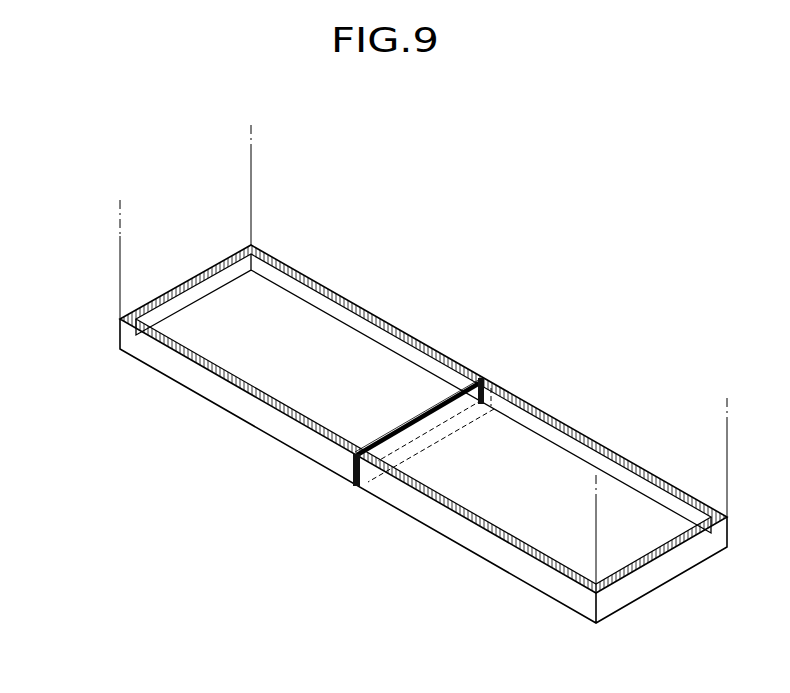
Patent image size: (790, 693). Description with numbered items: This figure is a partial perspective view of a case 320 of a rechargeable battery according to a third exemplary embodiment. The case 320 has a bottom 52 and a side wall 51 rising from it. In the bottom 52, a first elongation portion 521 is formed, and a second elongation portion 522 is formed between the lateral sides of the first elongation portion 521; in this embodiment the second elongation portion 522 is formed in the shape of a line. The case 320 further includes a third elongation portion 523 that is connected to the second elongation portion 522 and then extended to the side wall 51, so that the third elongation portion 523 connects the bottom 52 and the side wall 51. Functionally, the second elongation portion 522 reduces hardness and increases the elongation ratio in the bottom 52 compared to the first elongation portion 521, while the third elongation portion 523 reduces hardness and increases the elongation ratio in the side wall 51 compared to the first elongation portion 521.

The case 320 is at (109, 233).
The side wall 51 is at (572, 427).
The bottom 52 is at (232, 349).
The first elongation portion 521 is at (308, 381).
The second elongation portion 522 is at (408, 443).
The third elongation portion 523 is at (478, 391).